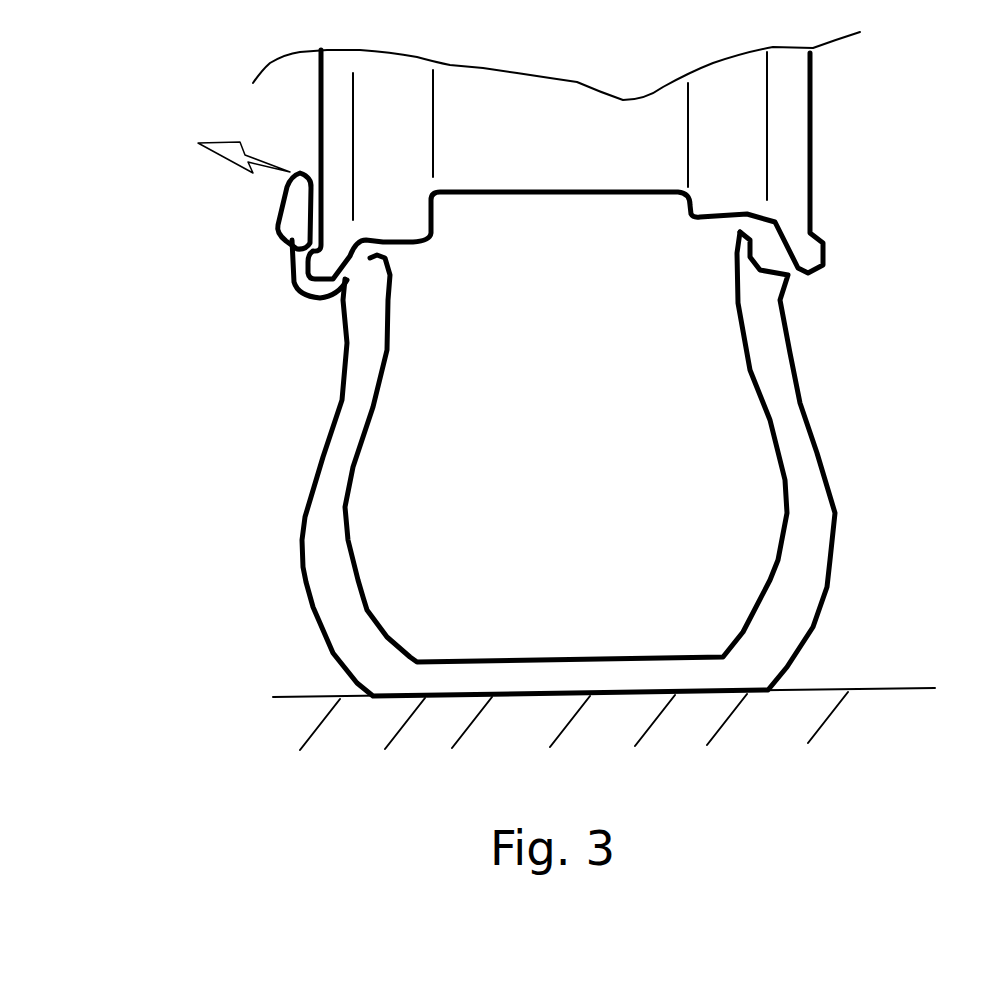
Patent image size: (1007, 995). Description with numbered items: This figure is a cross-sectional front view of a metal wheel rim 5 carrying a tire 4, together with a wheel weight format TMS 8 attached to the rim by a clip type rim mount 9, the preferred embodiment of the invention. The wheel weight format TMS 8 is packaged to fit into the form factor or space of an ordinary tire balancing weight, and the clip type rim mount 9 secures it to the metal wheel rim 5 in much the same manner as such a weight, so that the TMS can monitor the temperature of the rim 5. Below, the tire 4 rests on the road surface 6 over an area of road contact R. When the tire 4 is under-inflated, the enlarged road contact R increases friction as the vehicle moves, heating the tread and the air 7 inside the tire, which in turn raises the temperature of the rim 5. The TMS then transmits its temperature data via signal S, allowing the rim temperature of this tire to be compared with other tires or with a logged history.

The tire 4 is at (843, 487).
The metal wheel rim 5 is at (833, 150).
The road surface 6 is at (888, 685).
The air 7 is at (542, 425).
The wheel weight format TMS 8 is at (260, 208).
The clip type rim mount 9 is at (287, 295).
The signal S is at (207, 153).
The road contact R is at (367, 693).